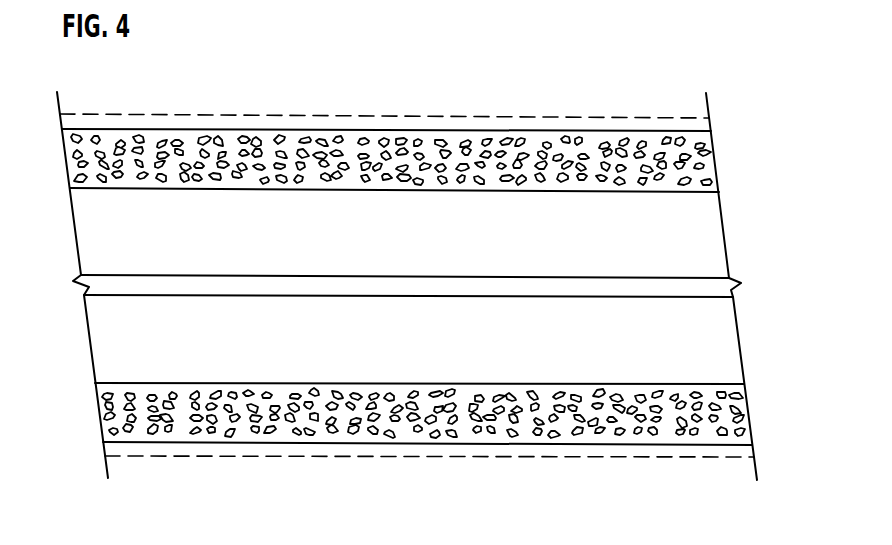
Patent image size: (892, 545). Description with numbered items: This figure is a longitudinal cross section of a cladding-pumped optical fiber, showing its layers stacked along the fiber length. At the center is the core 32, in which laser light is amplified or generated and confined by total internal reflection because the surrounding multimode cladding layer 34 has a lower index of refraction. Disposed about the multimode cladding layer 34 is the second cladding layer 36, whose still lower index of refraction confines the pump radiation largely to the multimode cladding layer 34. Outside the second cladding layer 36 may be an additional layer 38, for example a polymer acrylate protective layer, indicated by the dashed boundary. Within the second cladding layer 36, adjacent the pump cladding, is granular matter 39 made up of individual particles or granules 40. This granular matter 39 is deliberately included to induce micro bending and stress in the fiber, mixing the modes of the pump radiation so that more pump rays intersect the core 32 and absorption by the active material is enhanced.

The core 32 is at (715, 277).
The multimode cladding layer 34 is at (371, 246).
The second cladding layer 36 is at (717, 183).
The additional layer 38 is at (700, 126).
The granular matter 39 is at (319, 135).
The granules 40 is at (470, 140).